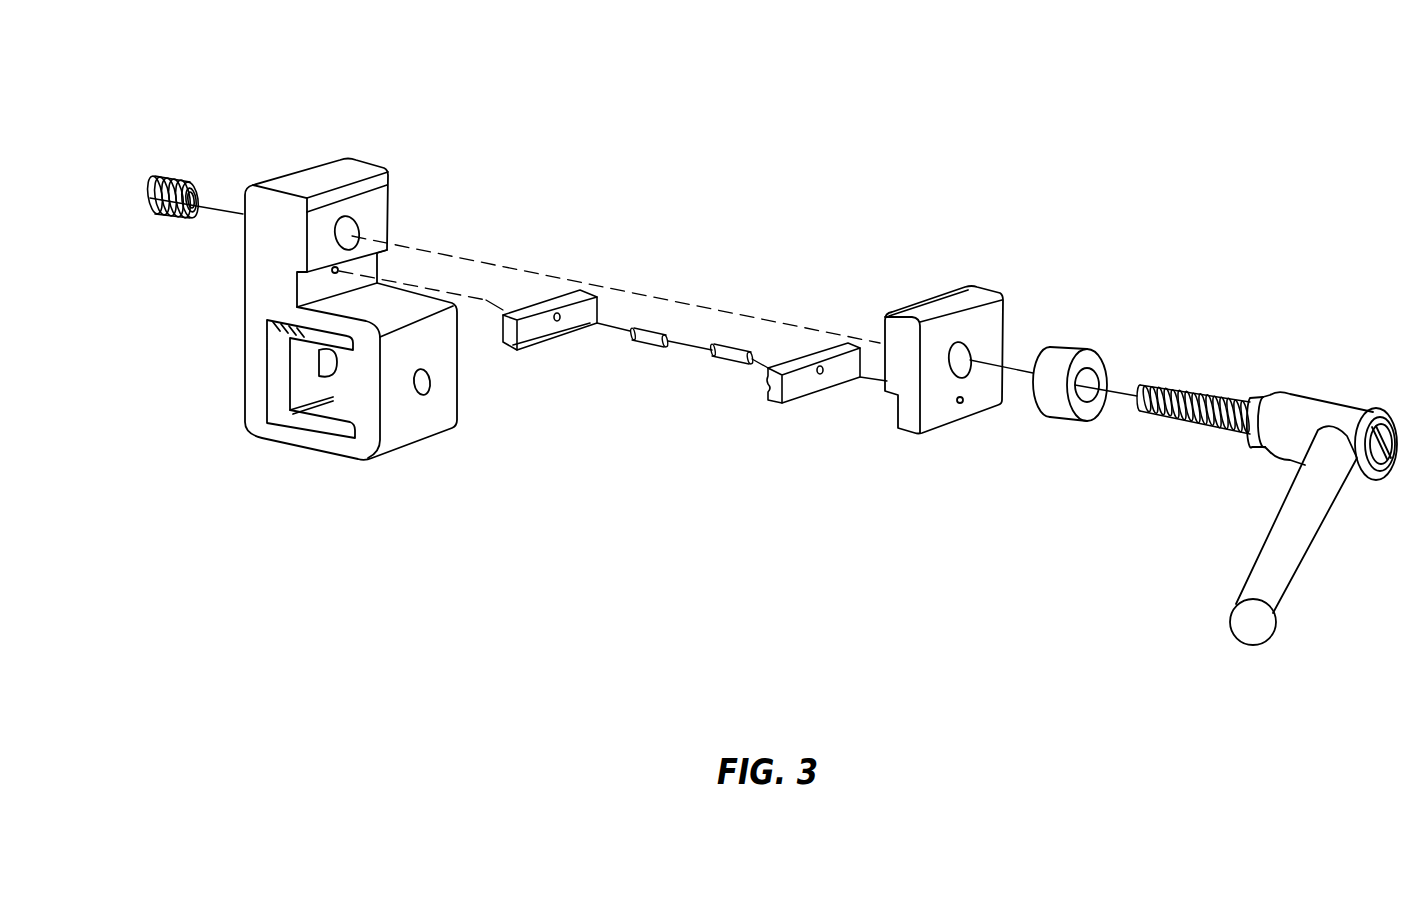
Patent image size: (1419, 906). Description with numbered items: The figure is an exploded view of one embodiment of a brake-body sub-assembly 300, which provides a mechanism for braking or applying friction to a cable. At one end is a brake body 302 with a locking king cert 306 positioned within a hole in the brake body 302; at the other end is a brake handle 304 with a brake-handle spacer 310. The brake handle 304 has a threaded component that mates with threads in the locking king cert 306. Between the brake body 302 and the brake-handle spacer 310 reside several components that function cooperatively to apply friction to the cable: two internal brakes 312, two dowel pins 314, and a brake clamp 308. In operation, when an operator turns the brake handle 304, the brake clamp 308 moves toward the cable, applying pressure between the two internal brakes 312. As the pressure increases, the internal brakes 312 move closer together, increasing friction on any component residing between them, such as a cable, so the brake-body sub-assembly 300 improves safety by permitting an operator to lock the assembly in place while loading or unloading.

The brake-body sub-assembly 300 is at (1062, 112).
The brake body 302 is at (325, 455).
The brake handle 304 is at (1233, 642).
The locking king cert 306 is at (153, 170).
The brake clamp 308 is at (905, 438).
The brake-handle spacer 310 is at (1055, 418).
The internal brakes 312 is at (772, 412).
The dowel pins 314 is at (645, 345).